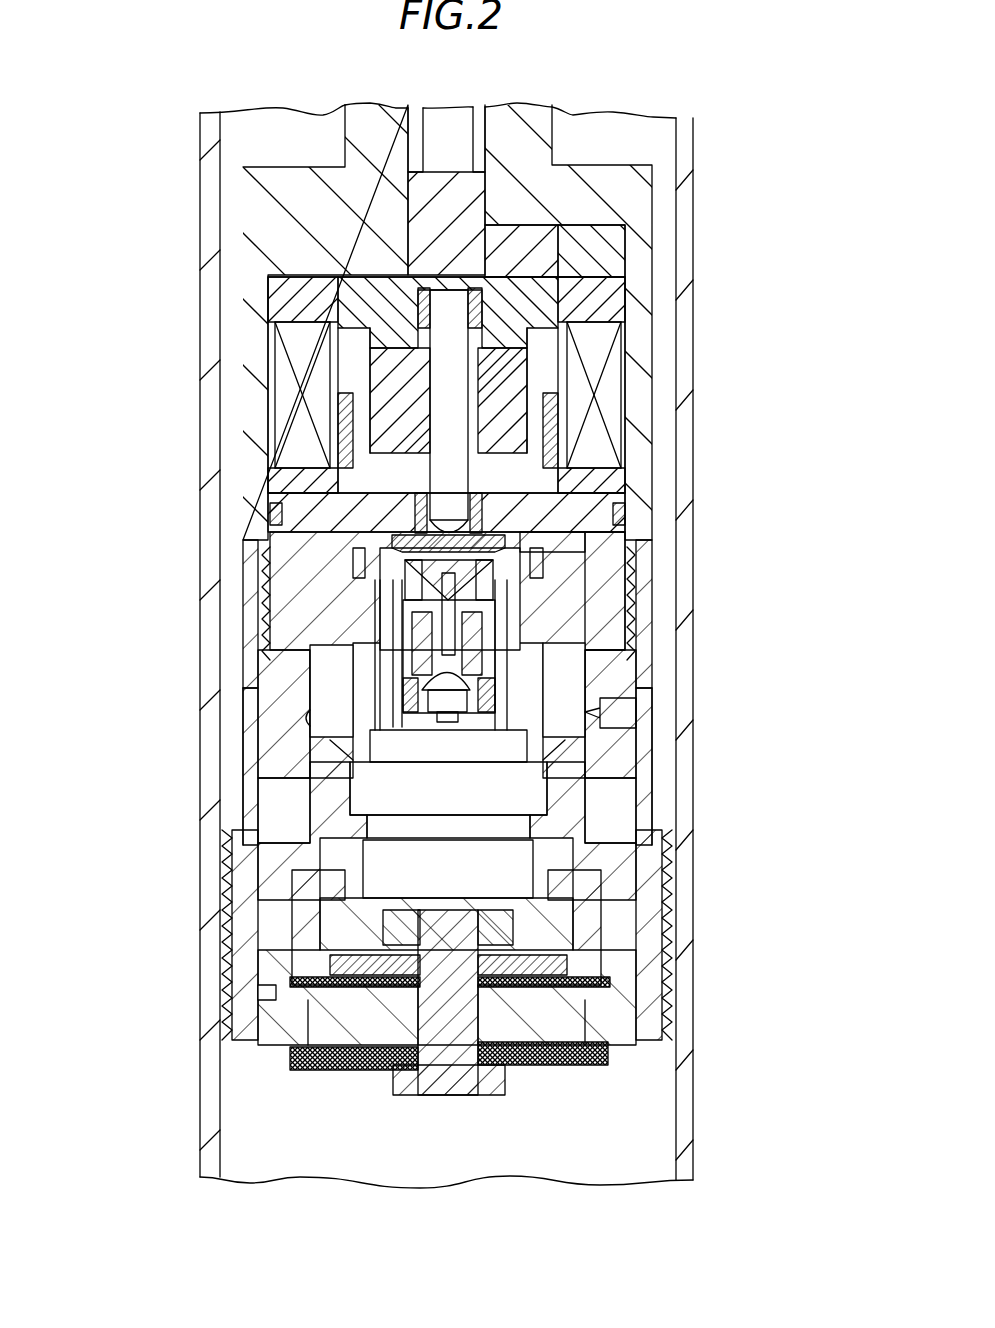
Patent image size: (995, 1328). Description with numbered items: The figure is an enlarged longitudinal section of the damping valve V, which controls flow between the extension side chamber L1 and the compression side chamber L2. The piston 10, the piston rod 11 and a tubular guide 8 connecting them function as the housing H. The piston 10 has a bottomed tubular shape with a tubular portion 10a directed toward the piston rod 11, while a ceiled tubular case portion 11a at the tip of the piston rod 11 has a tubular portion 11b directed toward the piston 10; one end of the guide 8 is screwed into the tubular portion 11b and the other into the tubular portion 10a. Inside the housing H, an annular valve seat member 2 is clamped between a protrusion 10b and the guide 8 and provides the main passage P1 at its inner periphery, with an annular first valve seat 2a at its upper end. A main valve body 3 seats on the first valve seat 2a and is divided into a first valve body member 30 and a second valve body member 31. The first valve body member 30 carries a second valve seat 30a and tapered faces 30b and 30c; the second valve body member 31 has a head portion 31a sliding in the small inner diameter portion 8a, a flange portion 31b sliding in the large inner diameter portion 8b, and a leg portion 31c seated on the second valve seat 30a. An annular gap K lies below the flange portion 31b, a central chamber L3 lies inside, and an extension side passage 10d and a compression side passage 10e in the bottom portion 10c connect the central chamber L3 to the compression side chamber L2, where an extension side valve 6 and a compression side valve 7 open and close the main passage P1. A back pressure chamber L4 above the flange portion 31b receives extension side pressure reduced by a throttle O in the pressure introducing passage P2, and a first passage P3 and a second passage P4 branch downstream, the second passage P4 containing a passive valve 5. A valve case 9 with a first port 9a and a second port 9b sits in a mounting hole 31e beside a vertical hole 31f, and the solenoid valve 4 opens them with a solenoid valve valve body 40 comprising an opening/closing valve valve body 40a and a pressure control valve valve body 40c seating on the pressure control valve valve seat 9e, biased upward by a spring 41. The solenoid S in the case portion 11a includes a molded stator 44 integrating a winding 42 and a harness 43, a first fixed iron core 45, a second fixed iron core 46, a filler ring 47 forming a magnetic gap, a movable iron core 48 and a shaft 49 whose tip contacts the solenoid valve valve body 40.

The piston rod 11 is at (350, 130).
The harness 43 is at (470, 130).
The case portion 11a is at (243, 192).
The damping valve V is at (222, 240).
The solenoid S is at (268, 290).
The molded stator 44 is at (628, 275).
The housing H is at (656, 310).
The winding 42 is at (300, 345).
The tubular portion 11b is at (250, 385).
The first fixed iron core 45 is at (548, 360).
The movable iron core 48 is at (383, 397).
The filler ring 47 is at (540, 405).
The shaft 49 is at (430, 465).
The second fixed iron core 46 is at (548, 467).
The solenoid valve 4 is at (300, 505).
The spring 41 is at (580, 520).
The pressure control valve valve seat 9e is at (395, 540).
The pressure control valve valve body 40c is at (625, 540).
The head portion 31a is at (330, 560).
The solenoid valve valve body 40 is at (620, 558).
The first port 9a is at (400, 610).
The small inner diameter portion 8a is at (600, 608).
The vertical hole 31f is at (415, 635).
The opening/closing valve valve body 40a is at (640, 640).
The second port 9b is at (450, 665).
The valve case 9 is at (500, 665).
The first passage P3 is at (331, 691).
The back pressure chamber L4 is at (580, 700).
The large inner diameter portion 8b is at (305, 715).
The pressure introducing passage P2 is at (606, 720).
The flange portion 31b is at (330, 745).
The throttle O is at (612, 735).
The leg portion 31c is at (300, 785).
The guide 8 is at (642, 758).
The passive valve 5 is at (438, 725).
The mounting hole 31e is at (470, 730).
The tapered face 30c is at (360, 815).
The second passage P4 is at (453, 765).
The second valve seat 30a is at (340, 815).
The second valve body member 31 is at (600, 790).
The first valve body member 30 is at (580, 830).
The main valve body 3 is at (774, 780).
The main passage P1 is at (262, 855).
The annular gap K is at (797, 883).
The first valve seat 2a is at (545, 860).
The central chamber L3 is at (437, 882).
The tapered face 30b is at (240, 900).
The tubular portion 10a is at (620, 915).
The valve seat member 2 is at (270, 925).
The protrusion 10b is at (620, 965).
The compression side valve 7 is at (335, 985).
The compression side passage 10e is at (290, 1010).
The extension side passage 10d is at (565, 1015).
The piston 10 is at (215, 1040).
The bottom portion 10c is at (275, 1035).
The extension side valve 6 is at (610, 1070).
The compression side chamber L2 is at (467, 1155).
The extension side chamber L1 is at (618, 152).